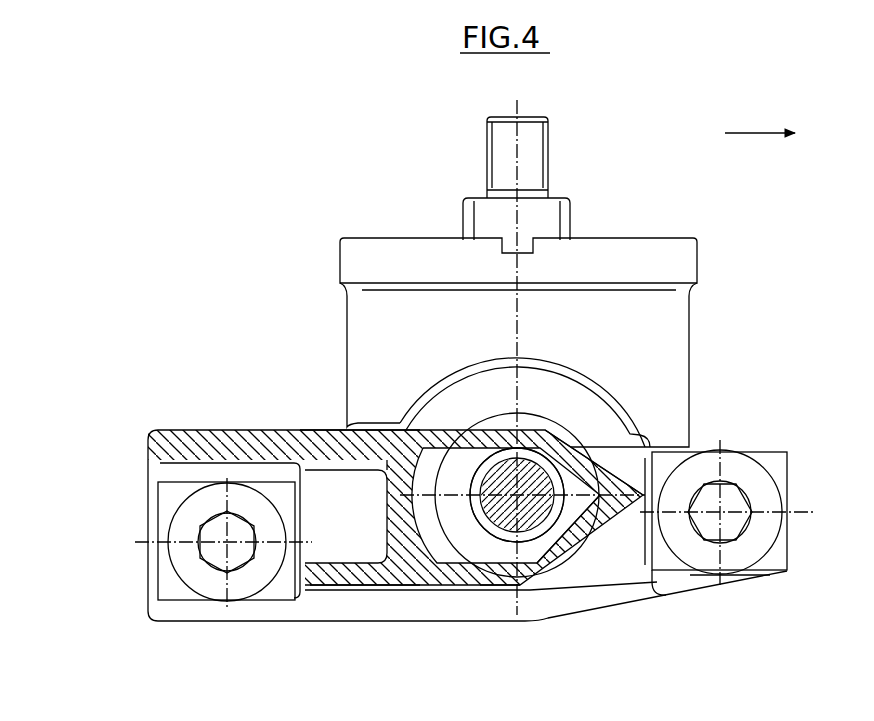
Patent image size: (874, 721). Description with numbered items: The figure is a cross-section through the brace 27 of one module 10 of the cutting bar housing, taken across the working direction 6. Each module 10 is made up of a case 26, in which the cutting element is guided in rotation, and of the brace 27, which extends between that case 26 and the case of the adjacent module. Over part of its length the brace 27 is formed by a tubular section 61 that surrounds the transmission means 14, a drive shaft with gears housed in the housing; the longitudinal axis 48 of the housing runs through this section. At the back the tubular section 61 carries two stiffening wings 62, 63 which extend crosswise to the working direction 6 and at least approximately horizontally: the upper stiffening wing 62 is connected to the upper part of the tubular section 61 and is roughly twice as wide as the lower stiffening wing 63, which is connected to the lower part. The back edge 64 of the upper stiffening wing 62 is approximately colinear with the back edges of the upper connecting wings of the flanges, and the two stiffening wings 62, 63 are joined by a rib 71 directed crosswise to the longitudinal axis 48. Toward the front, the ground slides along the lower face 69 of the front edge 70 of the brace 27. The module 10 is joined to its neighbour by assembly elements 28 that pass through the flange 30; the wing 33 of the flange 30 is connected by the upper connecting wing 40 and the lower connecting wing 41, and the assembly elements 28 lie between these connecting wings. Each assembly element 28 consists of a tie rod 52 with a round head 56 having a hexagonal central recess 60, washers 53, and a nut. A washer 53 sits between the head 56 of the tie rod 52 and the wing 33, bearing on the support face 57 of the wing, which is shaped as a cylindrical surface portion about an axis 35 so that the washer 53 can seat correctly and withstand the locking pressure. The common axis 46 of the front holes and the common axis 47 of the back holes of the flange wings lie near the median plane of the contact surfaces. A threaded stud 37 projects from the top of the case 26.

The working direction 6 is at (745, 133).
The module 10 is at (292, 375).
The transmission means 14 is at (510, 512).
The case 26 is at (338, 321).
The brace 27 is at (430, 598).
The assembly element 28 is at (181, 590).
The flange 30 is at (788, 440).
The wing 33 is at (158, 472).
The axis 35 is at (142, 542).
The threaded stud 37 is at (517, 110).
The upper connecting wing 40 is at (705, 455).
The lower connecting wing 41 is at (183, 615).
The common axis of the front holes 46 is at (722, 513).
The common axis of the back holes 47 is at (227, 543).
The longitudinal axis 48 is at (520, 500).
The tie rod 52 is at (213, 583).
The washer 53 is at (167, 577).
The head 56 is at (233, 585).
The support face 57 is at (153, 557).
The hexagonal central recess 60 is at (237, 530).
The tubular section 61 is at (500, 573).
The upper stiffening wing 62 is at (307, 440).
The lower stiffening wing 63 is at (333, 575).
The back edge 64 is at (148, 445).
The lower face 69 is at (583, 530).
The front edge 70 is at (660, 466).
The rib 71 is at (328, 526).